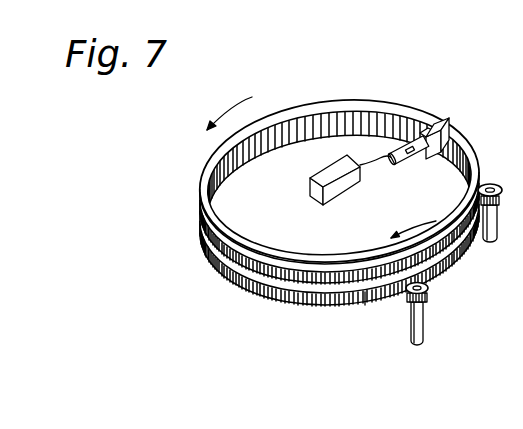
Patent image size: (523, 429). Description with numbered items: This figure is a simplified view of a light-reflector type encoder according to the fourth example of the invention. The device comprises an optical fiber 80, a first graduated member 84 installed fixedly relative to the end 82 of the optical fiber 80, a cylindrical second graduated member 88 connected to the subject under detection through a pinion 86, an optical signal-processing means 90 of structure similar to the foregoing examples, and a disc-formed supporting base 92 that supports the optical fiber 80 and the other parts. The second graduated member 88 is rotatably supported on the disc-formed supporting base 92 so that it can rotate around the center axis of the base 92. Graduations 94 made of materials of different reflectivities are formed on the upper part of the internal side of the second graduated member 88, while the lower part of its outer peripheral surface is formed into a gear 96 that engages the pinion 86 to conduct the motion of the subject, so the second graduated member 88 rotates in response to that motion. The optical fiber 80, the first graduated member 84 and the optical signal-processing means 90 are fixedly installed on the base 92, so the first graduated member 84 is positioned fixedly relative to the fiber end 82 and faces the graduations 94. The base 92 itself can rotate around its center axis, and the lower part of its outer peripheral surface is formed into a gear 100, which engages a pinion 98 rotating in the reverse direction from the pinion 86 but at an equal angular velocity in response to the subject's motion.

The optical fiber 80 is at (402, 165).
The end of the optical fiber 82 is at (422, 126).
The first graduated member 84 is at (430, 128).
The pinion 86 is at (502, 192).
The second graduated member 88 is at (474, 150).
The optical signal-processing means 90 is at (317, 201).
The disc-formed supporting base 92 is at (440, 263).
The graduations 94 is at (282, 124).
The gear 96 is at (460, 238).
The pinion 98 is at (429, 290).
The gear 100 is at (366, 303).